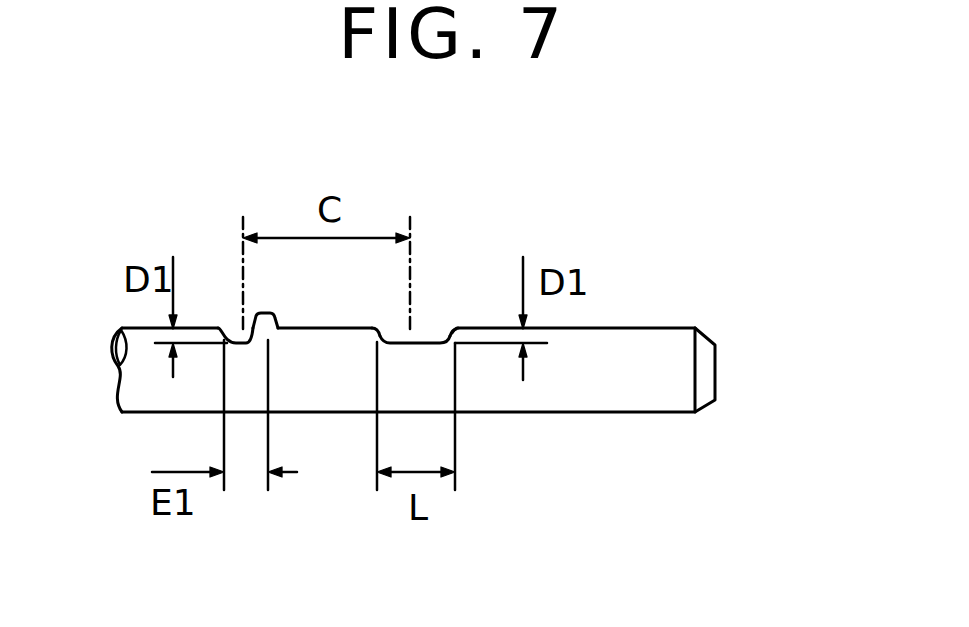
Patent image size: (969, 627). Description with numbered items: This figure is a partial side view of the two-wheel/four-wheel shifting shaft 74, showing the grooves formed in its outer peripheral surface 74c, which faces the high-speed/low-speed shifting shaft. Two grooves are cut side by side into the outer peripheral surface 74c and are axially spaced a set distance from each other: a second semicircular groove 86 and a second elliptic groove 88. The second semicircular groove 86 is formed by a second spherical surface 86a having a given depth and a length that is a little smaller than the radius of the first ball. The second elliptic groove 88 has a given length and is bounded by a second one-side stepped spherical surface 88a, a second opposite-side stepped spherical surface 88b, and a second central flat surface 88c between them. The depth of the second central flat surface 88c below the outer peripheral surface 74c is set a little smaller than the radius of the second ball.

The two-wheel/four-wheel shifting shaft 74 is at (722, 265).
The outer peripheral surface 74c is at (652, 330).
The second semicircular groove 86 is at (235, 328).
The second spherical surface 86a is at (273, 317).
The second elliptic groove 88 is at (417, 330).
The second one-side stepped spherical surface 88a is at (387, 337).
The second opposite-side stepped spherical surface 88b is at (447, 337).
The second central flat surface 88c is at (428, 337).